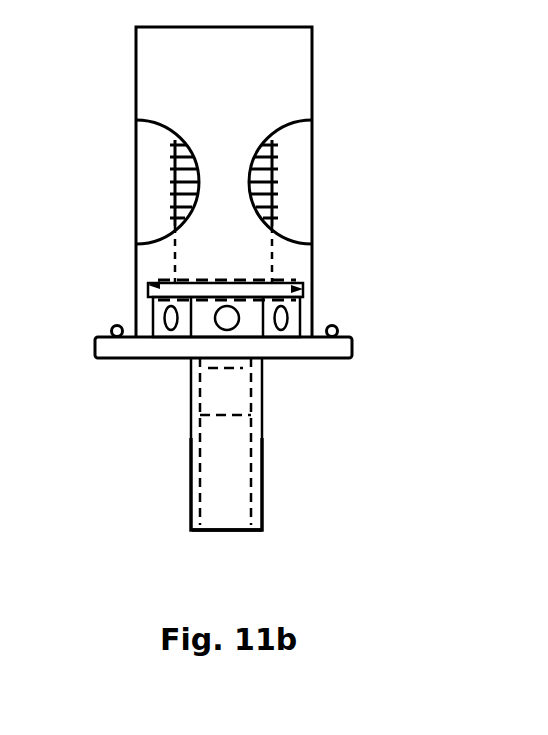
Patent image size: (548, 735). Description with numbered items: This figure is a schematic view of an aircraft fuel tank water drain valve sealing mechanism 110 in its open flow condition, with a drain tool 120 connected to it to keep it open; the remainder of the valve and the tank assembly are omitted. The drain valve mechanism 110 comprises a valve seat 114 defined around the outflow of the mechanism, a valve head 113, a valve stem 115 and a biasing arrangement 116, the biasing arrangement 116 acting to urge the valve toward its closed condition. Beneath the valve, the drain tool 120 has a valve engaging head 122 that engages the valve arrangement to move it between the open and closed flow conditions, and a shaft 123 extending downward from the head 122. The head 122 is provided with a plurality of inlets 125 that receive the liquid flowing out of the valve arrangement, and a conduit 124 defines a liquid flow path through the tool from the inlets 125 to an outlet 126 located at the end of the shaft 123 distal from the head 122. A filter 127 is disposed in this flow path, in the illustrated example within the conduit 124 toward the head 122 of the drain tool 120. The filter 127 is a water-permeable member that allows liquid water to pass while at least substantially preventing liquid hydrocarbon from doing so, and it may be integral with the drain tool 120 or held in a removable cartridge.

The drain valve sealing mechanism 110 is at (84, 73).
The valve head 113 is at (277, 292).
The valve seat 114 is at (353, 340).
The valve stem 115 is at (198, 245).
The biasing arrangement 116 is at (272, 180).
The drain tool 120 is at (328, 478).
The valve engaging head 122 is at (162, 305).
The shaft 123 is at (190, 477).
The conduit 124 is at (233, 498).
The inlets 125 is at (287, 314).
The outlet 126 is at (223, 527).
The filter 127 is at (218, 397).